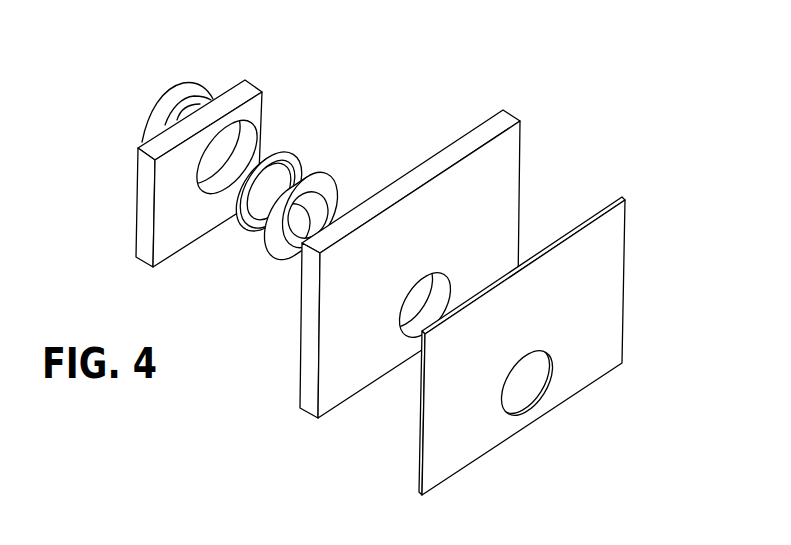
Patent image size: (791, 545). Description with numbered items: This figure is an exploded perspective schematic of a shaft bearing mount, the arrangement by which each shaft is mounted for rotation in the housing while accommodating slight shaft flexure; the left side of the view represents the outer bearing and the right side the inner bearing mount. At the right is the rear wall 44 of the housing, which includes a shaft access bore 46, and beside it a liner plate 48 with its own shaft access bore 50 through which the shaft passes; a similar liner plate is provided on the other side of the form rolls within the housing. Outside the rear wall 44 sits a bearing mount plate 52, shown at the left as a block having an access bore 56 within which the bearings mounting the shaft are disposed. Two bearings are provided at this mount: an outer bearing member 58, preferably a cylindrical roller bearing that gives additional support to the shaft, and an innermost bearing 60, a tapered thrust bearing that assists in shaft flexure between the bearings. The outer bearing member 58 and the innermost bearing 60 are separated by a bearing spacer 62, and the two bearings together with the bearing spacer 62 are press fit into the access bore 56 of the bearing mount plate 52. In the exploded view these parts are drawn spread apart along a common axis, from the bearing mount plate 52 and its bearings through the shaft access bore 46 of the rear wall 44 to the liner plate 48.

The rear wall 44 is at (512, 113).
The aperture in plate 46 is at (438, 288).
The liner plate 48 is at (617, 238).
The shaft access bore 50 is at (552, 367).
The bearing mount plate 52 is at (255, 83).
The access bore 56 is at (247, 137).
The outer bearing member 58 is at (200, 84).
The innermost bearing 60 is at (313, 182).
The bearing spacer 62 is at (293, 163).